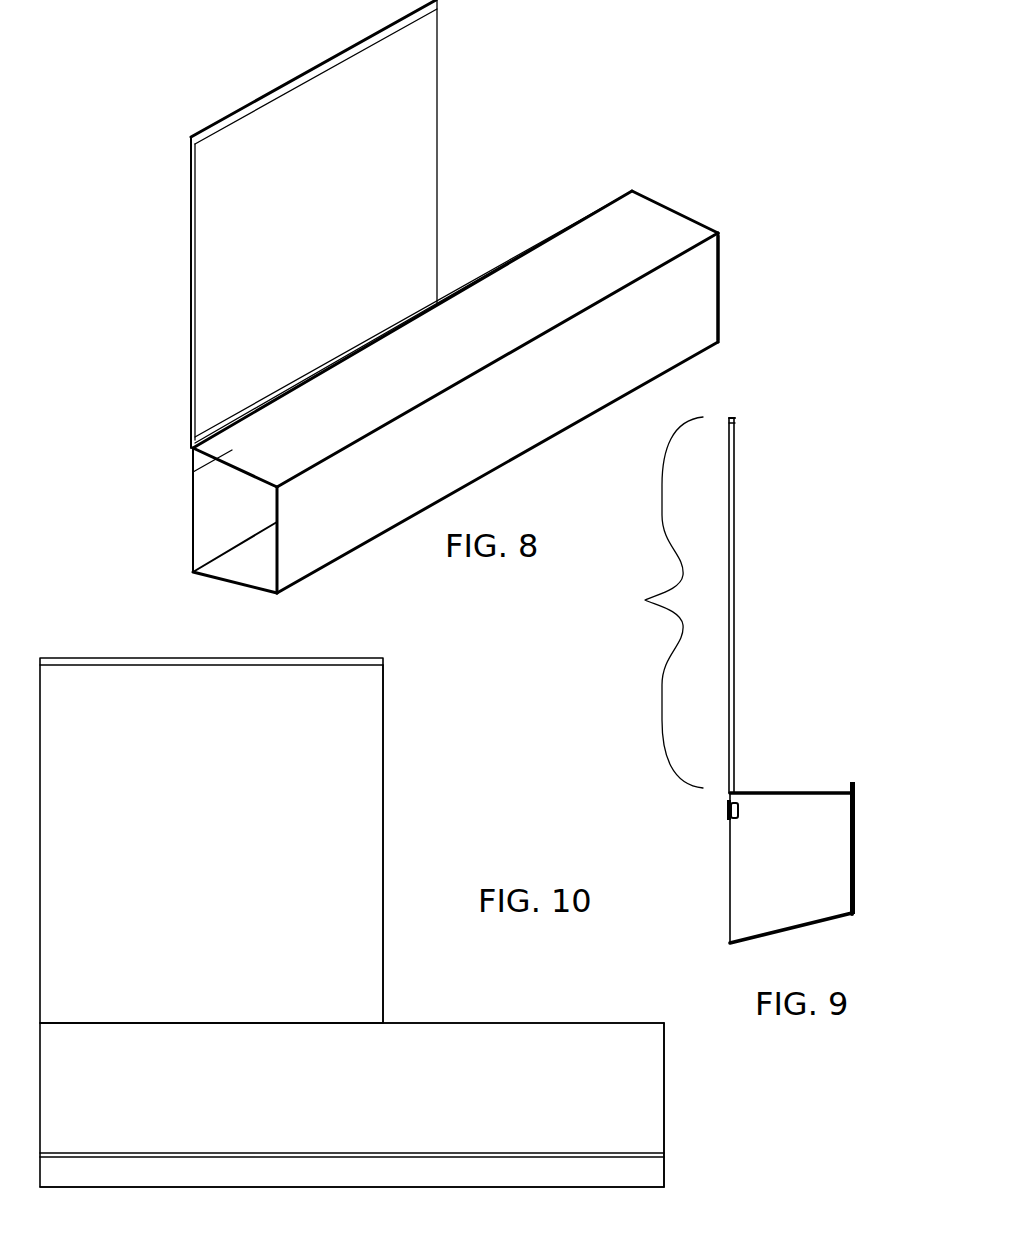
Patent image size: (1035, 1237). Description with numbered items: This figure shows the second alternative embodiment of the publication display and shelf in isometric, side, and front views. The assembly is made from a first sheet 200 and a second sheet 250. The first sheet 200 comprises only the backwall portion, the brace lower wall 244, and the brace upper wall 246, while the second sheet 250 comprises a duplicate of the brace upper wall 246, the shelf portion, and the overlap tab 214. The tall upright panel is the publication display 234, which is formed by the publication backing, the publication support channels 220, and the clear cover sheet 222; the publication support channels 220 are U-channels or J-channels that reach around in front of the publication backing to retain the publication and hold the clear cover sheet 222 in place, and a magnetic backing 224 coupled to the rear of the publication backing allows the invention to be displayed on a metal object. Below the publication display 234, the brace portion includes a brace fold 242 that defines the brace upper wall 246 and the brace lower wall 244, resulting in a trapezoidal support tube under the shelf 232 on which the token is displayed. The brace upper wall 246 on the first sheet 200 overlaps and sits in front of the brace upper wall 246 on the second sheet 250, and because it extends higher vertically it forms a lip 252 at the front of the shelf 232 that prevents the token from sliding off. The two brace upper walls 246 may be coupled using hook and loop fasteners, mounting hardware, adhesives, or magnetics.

In FIG. 8, the first sheet 200 is at (466, 393).
In FIG. 9, the first sheet 200 is at (791, 842).
In FIG. 10, the first sheet 200 is at (413, 1071).
In FIG. 8, the overlap tab 214 is at (200, 467).
In FIG. 8, the publication support channels 220 is at (372, 224).
In FIG. 10, the publication support channels 220 is at (247, 807).
In FIG. 10, the clear cover sheet 222 is at (370, 740).
In FIG. 8, the magnetic backing 224 is at (192, 245).
In FIG. 9, the shelf 232 is at (752, 791).
In FIG. 9, the publication display 234 is at (648, 600).
In FIG. 9, the brace fold 242 is at (857, 913).
In FIG. 8, the brace lower wall 244 is at (237, 563).
In FIG. 9, the brace lower wall 244 is at (792, 930).
In FIG. 10, the brace lower wall 244 is at (665, 1185).
In FIG. 8, the brace upper wall 246 is at (700, 307).
In FIG. 9, the brace upper wall 246 is at (857, 850).
In FIG. 10, the brace upper wall 246 is at (665, 1092).
In FIG. 8, the second sheet 250 is at (658, 222).
In FIG. 9, the second sheet 250 is at (792, 793).
In FIG. 9, the lip 252 is at (857, 782).
In FIG. 10, the lip 252 is at (490, 1022).